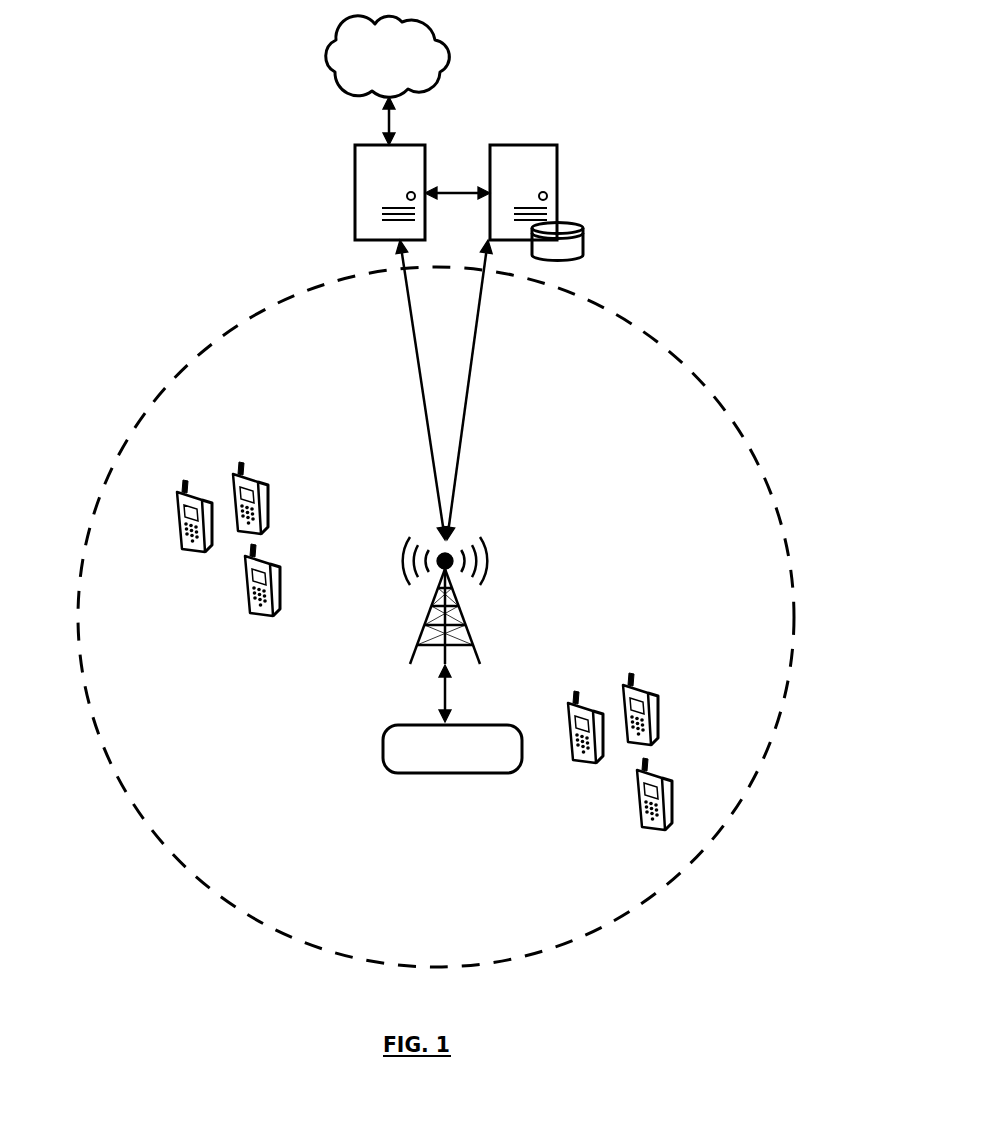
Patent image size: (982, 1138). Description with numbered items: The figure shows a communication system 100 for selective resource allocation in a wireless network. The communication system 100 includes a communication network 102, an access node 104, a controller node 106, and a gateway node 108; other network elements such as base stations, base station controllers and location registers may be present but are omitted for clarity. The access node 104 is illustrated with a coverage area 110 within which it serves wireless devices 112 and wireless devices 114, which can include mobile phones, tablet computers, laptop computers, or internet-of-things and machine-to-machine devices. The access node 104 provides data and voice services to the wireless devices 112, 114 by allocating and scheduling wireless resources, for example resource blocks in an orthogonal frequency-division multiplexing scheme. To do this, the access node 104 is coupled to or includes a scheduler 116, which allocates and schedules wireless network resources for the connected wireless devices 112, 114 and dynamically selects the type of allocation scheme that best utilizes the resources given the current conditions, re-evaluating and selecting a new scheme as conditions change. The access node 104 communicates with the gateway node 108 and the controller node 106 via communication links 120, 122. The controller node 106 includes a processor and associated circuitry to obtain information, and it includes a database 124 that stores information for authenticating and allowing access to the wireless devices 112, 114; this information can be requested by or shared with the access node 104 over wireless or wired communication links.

The communication system 100 is at (503, 75).
The communication network 102 is at (409, 70).
The access node 104 is at (400, 536).
The controller node 106 is at (557, 163).
The gateway node 108 is at (355, 165).
The coverage area 110 is at (193, 331).
The wireless devices 112 is at (642, 633).
The wireless devices 114 is at (253, 419).
The scheduler 116 is at (477, 724).
The communication link 120 is at (398, 334).
The communication link 122 is at (492, 331).
The database 124 is at (583, 228).